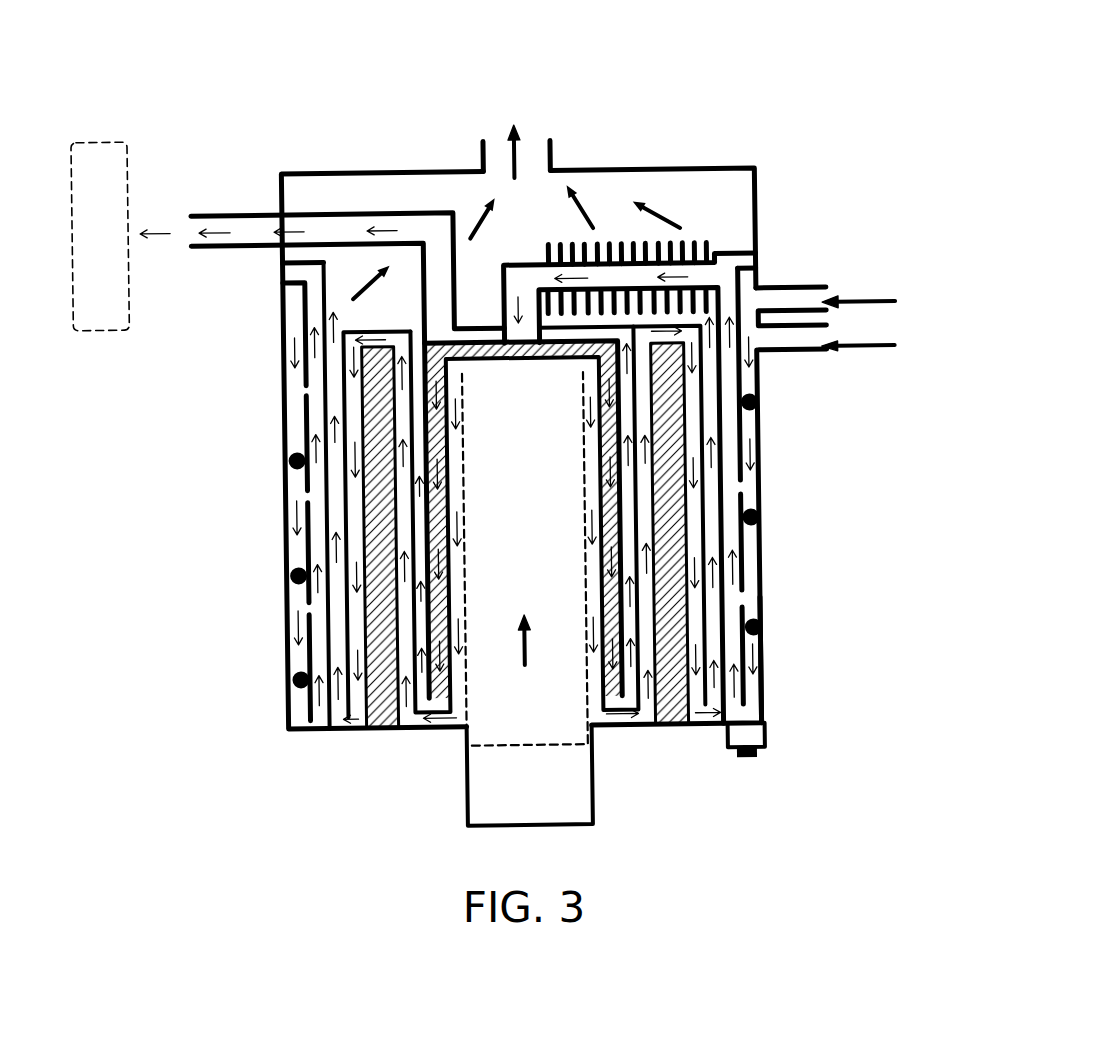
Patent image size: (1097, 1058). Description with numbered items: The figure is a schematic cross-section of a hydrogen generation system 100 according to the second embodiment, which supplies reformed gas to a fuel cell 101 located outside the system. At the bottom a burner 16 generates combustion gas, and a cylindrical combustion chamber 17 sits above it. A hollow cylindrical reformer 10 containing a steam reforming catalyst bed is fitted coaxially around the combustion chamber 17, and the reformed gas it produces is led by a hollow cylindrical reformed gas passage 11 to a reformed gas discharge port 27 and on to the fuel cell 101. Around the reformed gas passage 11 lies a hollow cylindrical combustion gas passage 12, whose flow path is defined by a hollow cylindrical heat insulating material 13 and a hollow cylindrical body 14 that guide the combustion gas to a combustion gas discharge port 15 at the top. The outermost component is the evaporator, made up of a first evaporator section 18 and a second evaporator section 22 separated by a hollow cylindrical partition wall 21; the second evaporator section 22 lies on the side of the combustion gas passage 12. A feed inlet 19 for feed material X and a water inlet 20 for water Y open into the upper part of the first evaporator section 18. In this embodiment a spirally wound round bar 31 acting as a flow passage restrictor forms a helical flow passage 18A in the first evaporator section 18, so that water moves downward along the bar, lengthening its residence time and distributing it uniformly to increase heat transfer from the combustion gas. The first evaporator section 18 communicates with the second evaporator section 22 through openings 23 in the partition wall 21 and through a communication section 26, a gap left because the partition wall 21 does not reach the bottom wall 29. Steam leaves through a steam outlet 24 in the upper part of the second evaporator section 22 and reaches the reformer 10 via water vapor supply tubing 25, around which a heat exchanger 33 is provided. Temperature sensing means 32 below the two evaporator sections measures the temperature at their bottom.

The hydrogen generation system 100 is at (338, 150).
The fuel cell 101 is at (86, 134).
The reformer 10 is at (426, 418).
The reformed gas passage 11 is at (419, 513).
The combustion gas passage 12 is at (401, 532).
The heat insulating material 13 is at (373, 598).
The hollow cylindrical body 14 is at (342, 664).
The combustion gas discharge port 15 is at (531, 165).
The burner 16 is at (569, 771).
The combustion chamber 17 is at (490, 469).
The first evaporator section 18 is at (747, 280).
The helical flow passage 18A is at (760, 426).
The feed inlet 19 is at (774, 295).
The water inlet 20 is at (796, 331).
The partition wall 21 is at (747, 533).
The second evaporator section 22 is at (742, 556).
The openings 23 is at (312, 382).
The steam outlet 24 is at (720, 278).
The water vapor supply tubing 25 is at (635, 281).
The communication section 26 is at (316, 726).
The reformed gas discharge port 27 is at (263, 210).
The bottom wall 29 is at (349, 731).
The spirally wound round bar 31 is at (761, 638).
The temperature sensing means 32 is at (745, 736).
The heat exchanger 33 is at (607, 244).